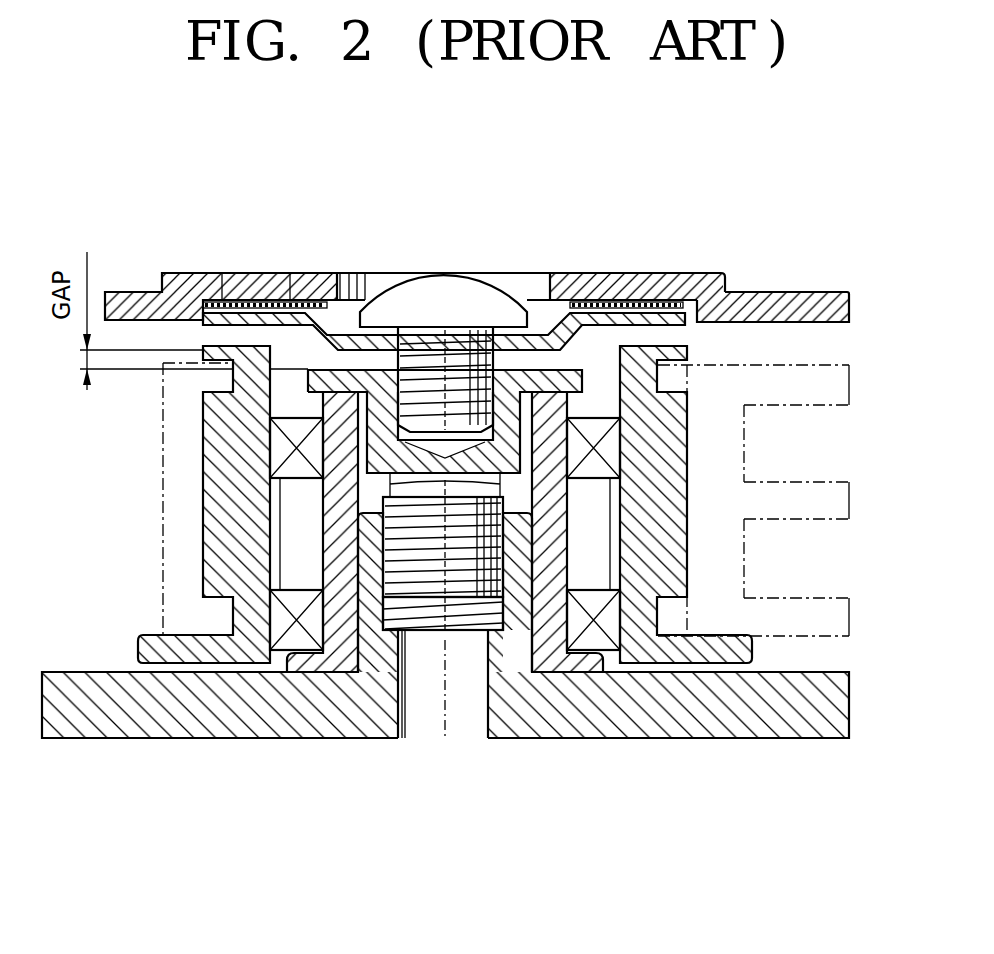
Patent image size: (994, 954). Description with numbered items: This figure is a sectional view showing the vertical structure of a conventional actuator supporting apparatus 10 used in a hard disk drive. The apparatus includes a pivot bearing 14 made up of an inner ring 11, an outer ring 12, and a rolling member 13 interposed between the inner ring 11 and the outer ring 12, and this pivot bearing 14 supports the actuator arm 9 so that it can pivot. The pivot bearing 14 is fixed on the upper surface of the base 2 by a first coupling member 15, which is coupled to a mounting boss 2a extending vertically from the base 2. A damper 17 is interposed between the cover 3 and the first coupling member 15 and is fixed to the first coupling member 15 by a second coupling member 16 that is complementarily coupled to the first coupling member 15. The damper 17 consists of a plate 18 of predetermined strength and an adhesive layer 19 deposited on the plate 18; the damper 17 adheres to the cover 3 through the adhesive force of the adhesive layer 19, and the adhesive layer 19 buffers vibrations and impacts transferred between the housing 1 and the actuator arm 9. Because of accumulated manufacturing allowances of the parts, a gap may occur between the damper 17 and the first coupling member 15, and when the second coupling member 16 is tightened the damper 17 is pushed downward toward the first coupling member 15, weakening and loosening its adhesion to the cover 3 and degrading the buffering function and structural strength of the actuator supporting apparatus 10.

The housing 1 is at (489, 561).
The base 2 is at (849, 677).
The mounting boss 2a is at (518, 623).
The cover 3 is at (845, 322).
The actuator arm 9 is at (790, 365).
The actuator supporting apparatus 10 is at (118, 497).
The inner ring 11 is at (573, 372).
The outer ring 12 is at (667, 350).
The rolling member 13 is at (597, 433).
The pivot bearing 14 is at (445, 448).
The first coupling member 15 is at (557, 405).
The second coupling member 16 is at (445, 290).
The damper 17 is at (415, 260).
The plate 18 is at (222, 280).
The adhesive layer 19 is at (213, 213).